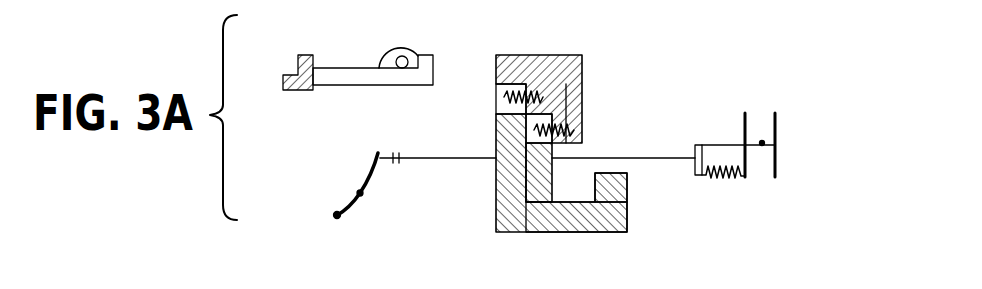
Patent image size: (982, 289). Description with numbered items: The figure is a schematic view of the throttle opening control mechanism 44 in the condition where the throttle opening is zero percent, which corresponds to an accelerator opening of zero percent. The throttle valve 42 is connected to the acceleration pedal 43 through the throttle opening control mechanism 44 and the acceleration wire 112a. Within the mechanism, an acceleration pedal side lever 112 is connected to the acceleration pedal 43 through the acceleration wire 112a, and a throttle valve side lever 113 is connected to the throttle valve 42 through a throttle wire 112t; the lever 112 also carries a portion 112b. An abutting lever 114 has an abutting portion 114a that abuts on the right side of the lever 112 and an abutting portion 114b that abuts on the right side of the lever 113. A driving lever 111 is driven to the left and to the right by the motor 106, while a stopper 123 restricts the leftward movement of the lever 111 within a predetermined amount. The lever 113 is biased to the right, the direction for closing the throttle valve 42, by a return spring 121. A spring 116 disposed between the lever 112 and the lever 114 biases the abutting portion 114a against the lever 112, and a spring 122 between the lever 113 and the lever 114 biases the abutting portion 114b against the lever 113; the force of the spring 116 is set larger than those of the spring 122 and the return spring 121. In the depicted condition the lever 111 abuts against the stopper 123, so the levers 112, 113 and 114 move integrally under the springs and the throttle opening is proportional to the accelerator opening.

The throttle valve 42 is at (768, 140).
The acceleration pedal 43 is at (337, 212).
The throttle opening control mechanism 44 is at (653, 88).
The motor 106 is at (397, 50).
The driving lever 111 is at (357, 77).
The acceleration pedal side lever 112 is at (497, 212).
The acceleration wire 112a is at (442, 160).
The stop block of slider 112b is at (627, 203).
The throttle wire 112t is at (683, 157).
The throttle valve side lever 113 is at (547, 192).
The abutting lever 114 is at (528, 55).
The abutting portion 114a is at (526, 114).
The abutting portion 114b is at (575, 145).
The spring 116 is at (547, 90).
The return spring 121 is at (715, 180).
The spring 122 is at (586, 70).
The stopper 123 is at (290, 72).